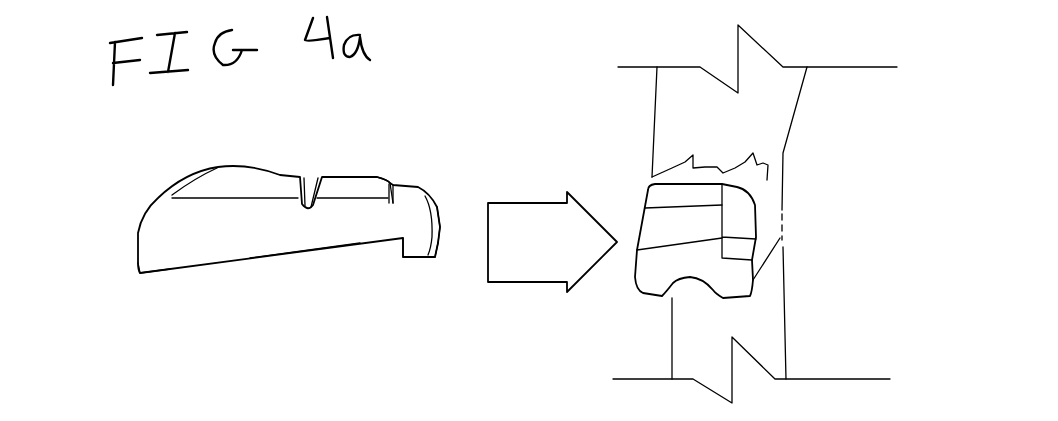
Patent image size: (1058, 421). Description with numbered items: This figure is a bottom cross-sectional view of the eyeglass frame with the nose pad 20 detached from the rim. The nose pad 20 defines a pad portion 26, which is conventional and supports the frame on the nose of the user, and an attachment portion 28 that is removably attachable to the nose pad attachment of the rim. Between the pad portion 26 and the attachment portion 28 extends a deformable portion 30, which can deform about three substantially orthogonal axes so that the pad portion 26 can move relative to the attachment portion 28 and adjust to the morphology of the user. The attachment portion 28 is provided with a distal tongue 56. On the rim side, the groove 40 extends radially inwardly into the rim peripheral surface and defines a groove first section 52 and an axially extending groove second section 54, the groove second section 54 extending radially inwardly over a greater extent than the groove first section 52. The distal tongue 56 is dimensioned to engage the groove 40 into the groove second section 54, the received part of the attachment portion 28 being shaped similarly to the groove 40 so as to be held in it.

The nose pad 20 is at (237, 145).
The attachment portion 28 is at (417, 181).
The pad portion 26 is at (148, 267).
The deformable portion 30 is at (303, 238).
The distal tongue 56 is at (420, 257).
The groove first section 52 is at (757, 102).
The groove second section 54 is at (751, 235).
The groove 40 is at (658, 313).